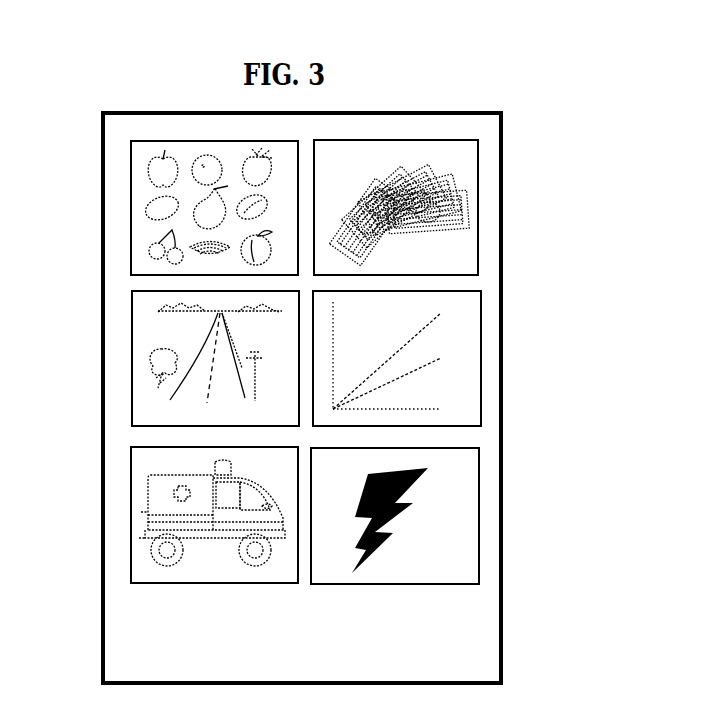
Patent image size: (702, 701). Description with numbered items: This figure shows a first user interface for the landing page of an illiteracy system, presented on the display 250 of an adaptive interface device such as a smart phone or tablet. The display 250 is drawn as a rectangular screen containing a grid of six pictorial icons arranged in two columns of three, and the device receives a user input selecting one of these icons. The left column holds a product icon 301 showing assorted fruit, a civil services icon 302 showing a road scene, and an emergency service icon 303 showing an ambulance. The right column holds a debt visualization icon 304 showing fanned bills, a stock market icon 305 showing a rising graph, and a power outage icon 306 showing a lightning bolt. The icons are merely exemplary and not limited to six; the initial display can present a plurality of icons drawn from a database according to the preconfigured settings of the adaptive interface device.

The display 250 is at (302, 398).
The product icon 301 is at (130, 208).
The civil services icon 302 is at (131, 360).
The emergency service icon 303 is at (130, 522).
The debt visualization icon 304 is at (480, 213).
The stock market icon 305 is at (481, 325).
The power outage icon 306 is at (480, 503).